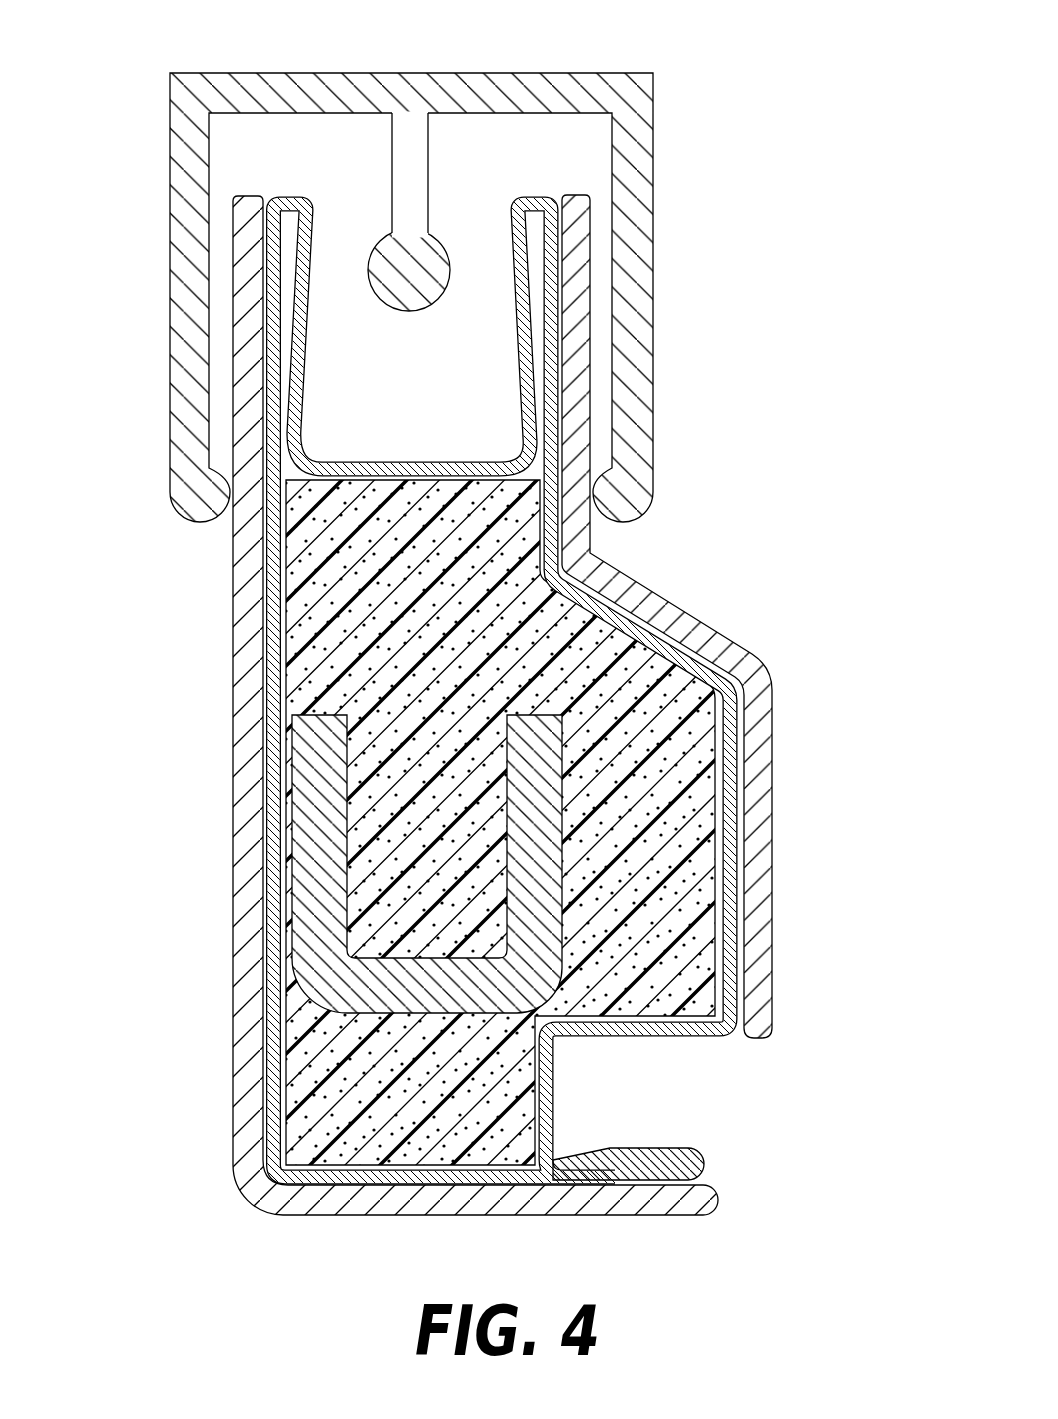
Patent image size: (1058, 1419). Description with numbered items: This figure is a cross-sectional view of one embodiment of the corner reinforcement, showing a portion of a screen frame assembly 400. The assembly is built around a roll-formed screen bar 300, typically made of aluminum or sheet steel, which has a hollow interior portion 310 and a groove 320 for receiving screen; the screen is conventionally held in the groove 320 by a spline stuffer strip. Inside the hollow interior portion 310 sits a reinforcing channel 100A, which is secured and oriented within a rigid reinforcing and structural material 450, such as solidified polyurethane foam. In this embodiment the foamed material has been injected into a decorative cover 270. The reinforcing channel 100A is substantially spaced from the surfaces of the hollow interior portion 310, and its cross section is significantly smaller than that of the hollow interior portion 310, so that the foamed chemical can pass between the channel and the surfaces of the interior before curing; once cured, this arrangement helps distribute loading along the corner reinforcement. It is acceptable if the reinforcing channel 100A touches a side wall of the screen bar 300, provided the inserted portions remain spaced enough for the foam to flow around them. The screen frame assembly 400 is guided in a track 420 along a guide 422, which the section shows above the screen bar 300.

The reinforcing channel 100A is at (572, 885).
The decorative cover 270 is at (782, 693).
The screen bar 300 is at (726, 1040).
The hollow interior portion 310 is at (570, 632).
The groove 320 is at (668, 1095).
The screen frame assembly 400 is at (225, 731).
The track 420 is at (592, 62).
The guide 422 is at (462, 269).
The rigid reinforcing and structural material 450 is at (686, 948).